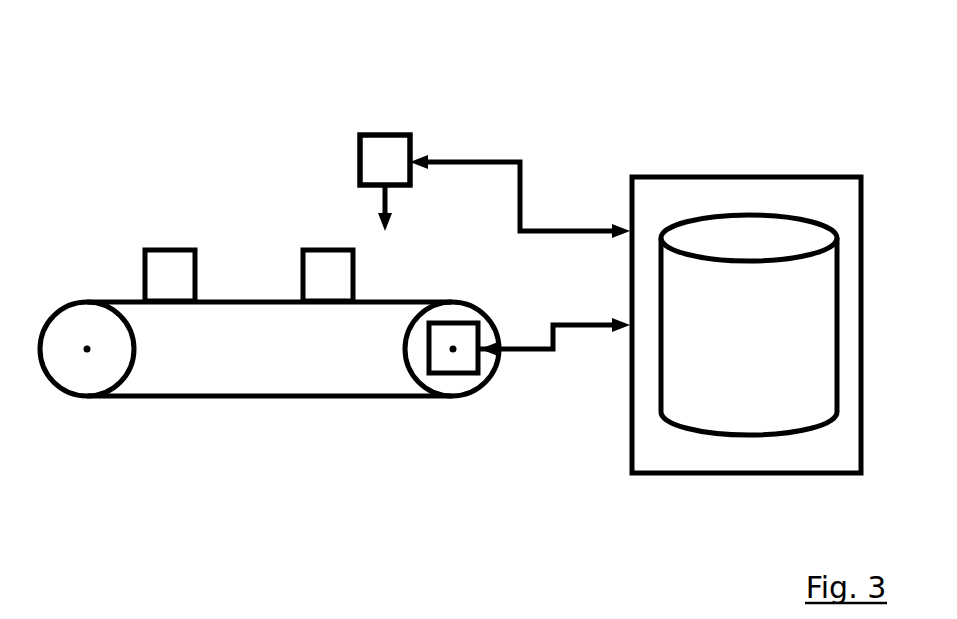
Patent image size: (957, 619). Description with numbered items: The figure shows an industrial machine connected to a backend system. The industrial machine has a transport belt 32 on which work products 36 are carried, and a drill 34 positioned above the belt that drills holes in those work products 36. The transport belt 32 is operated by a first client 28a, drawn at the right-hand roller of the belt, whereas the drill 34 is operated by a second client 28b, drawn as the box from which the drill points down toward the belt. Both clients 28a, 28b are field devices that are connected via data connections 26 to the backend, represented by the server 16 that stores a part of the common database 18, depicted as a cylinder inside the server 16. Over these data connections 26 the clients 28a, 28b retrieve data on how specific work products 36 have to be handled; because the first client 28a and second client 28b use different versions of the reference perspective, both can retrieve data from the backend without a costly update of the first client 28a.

The server 16 is at (745, 177).
The common database 18 is at (758, 232).
The data connection 26 is at (584, 325).
The first client 28a is at (463, 373).
The second client 28b is at (385, 135).
The transport belt 32 is at (367, 398).
The drill 34 is at (380, 135).
The work products 36 is at (160, 250).